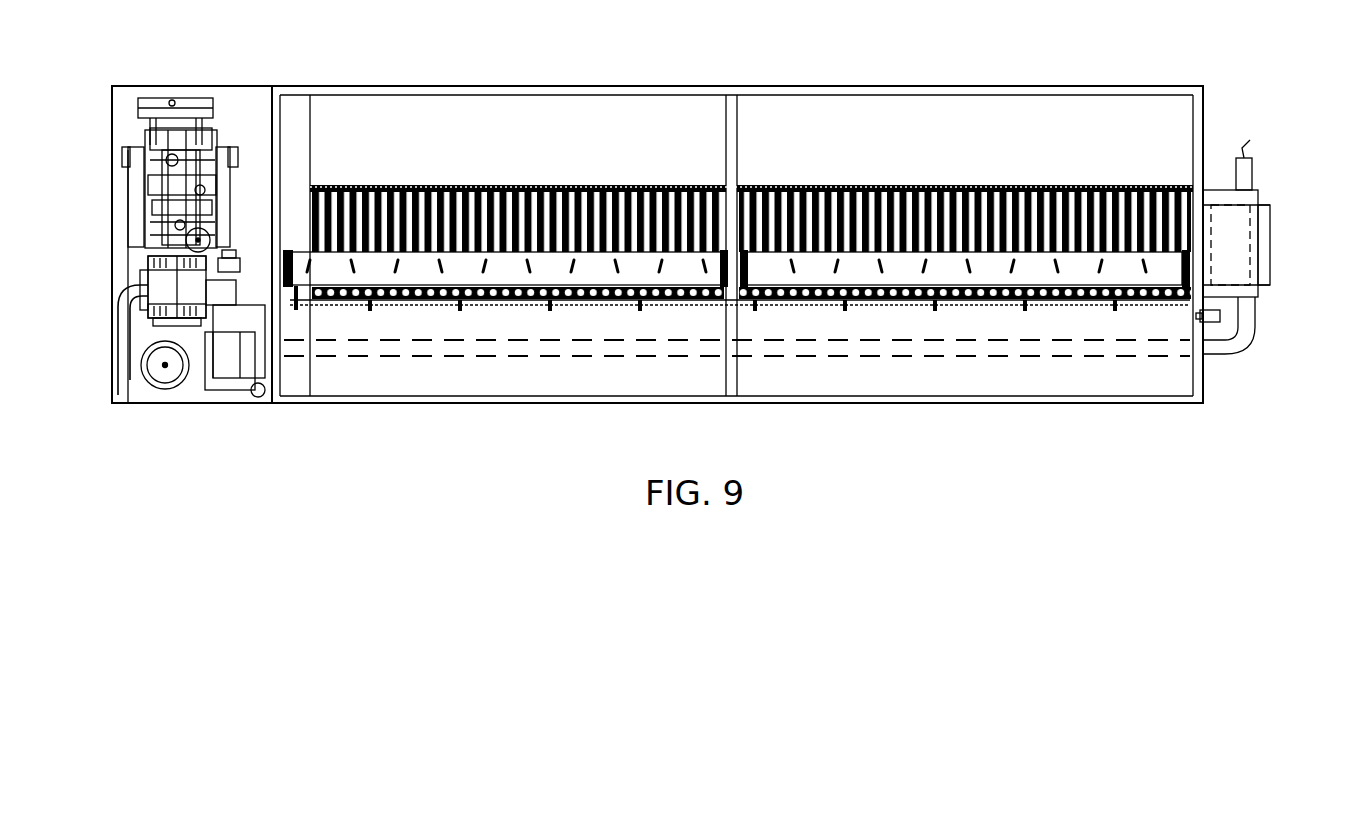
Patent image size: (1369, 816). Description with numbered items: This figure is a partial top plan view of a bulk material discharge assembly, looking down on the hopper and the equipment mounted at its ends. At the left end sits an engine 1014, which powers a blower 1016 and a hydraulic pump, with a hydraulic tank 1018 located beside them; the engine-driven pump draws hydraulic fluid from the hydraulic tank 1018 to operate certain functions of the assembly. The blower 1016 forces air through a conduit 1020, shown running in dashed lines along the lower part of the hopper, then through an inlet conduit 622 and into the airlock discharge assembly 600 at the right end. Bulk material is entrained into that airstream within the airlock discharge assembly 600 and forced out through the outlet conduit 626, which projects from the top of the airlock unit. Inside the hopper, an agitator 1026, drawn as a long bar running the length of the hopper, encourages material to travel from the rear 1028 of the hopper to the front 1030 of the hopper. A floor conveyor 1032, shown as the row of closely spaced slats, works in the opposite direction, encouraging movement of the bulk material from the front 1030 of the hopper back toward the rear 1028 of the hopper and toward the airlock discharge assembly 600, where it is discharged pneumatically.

The airlock discharge assembly 600 is at (1274, 253).
The inlet conduit 622 is at (1228, 352).
The outlet conduit 626 is at (1246, 158).
The engine 1014 is at (158, 258).
The blower 1016 is at (140, 238).
The hydraulic tank 1018 is at (228, 398).
The conduit 1020 is at (893, 358).
The agitator 1026 is at (545, 272).
The rear of the hopper 1028 is at (1196, 412).
The front of the hopper 1030 is at (282, 90).
The floor conveyor 1032 is at (968, 183).